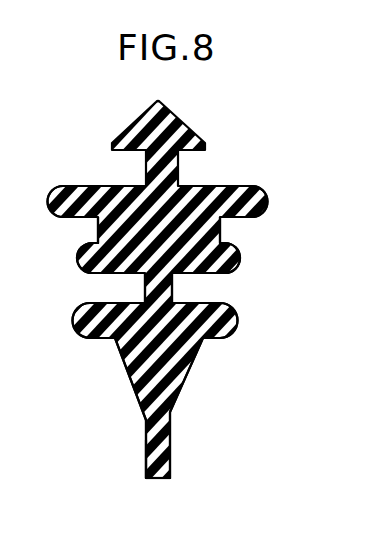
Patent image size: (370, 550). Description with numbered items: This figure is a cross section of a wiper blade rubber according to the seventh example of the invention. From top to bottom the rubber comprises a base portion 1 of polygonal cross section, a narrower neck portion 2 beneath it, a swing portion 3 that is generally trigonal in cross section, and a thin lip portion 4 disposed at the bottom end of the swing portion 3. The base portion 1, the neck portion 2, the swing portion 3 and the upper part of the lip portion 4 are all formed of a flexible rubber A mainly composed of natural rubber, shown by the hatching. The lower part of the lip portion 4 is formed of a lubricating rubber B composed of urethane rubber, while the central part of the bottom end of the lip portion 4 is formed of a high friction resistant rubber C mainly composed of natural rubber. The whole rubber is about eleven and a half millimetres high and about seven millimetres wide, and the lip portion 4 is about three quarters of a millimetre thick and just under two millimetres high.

The base portion 1 is at (233, 186).
The flexible rubber A is at (108, 241).
The neck portion 2 is at (172, 288).
The swing portion 3 is at (197, 360).
The lip portion 4 is at (170, 425).
The lubricating rubber B is at (148, 448).
The high friction resistant rubber C is at (152, 478).